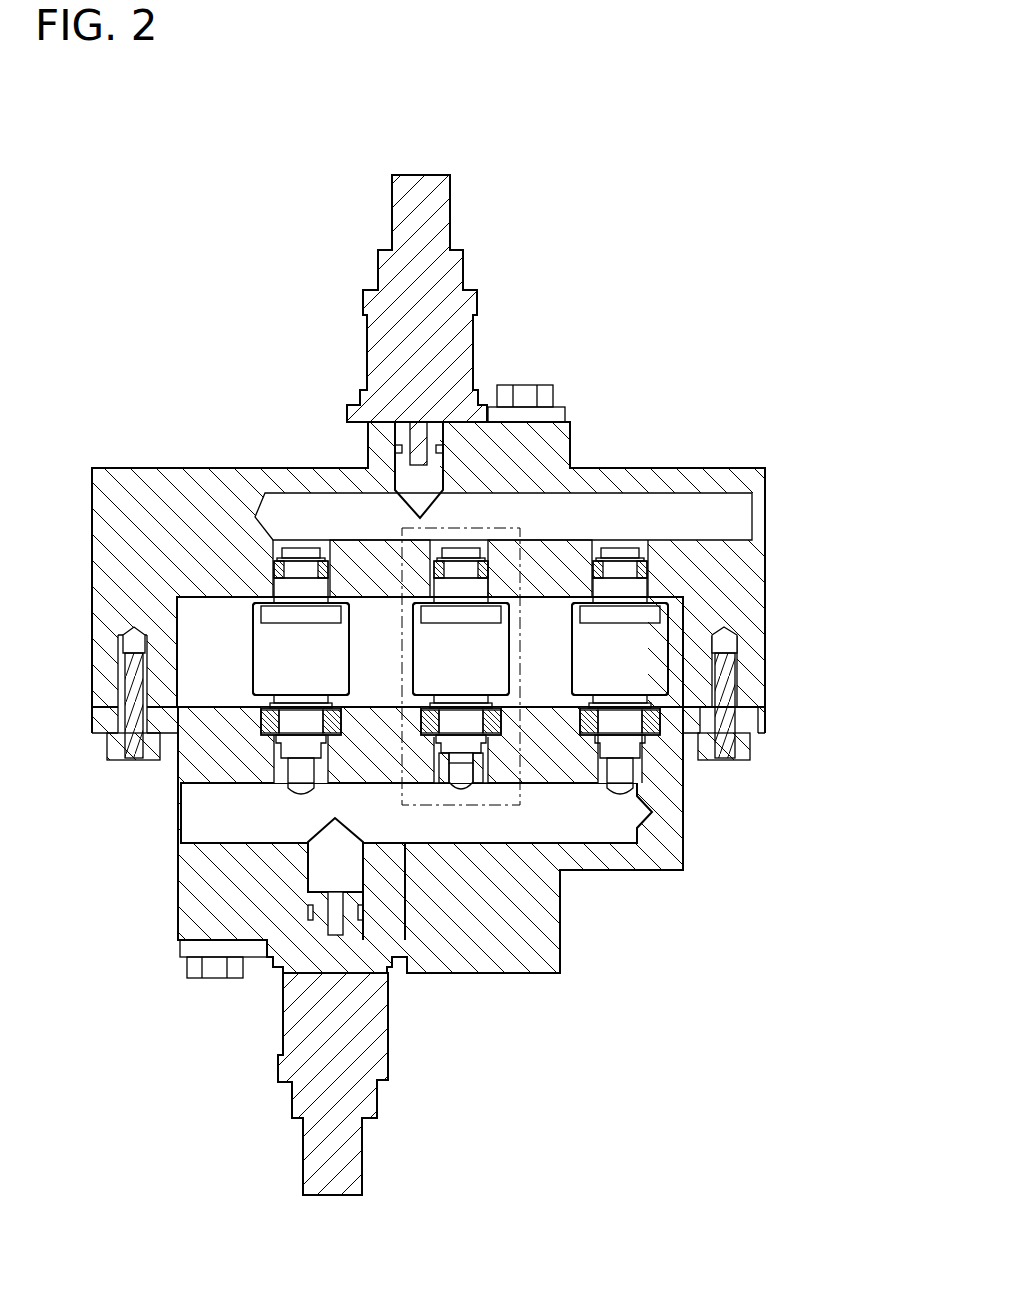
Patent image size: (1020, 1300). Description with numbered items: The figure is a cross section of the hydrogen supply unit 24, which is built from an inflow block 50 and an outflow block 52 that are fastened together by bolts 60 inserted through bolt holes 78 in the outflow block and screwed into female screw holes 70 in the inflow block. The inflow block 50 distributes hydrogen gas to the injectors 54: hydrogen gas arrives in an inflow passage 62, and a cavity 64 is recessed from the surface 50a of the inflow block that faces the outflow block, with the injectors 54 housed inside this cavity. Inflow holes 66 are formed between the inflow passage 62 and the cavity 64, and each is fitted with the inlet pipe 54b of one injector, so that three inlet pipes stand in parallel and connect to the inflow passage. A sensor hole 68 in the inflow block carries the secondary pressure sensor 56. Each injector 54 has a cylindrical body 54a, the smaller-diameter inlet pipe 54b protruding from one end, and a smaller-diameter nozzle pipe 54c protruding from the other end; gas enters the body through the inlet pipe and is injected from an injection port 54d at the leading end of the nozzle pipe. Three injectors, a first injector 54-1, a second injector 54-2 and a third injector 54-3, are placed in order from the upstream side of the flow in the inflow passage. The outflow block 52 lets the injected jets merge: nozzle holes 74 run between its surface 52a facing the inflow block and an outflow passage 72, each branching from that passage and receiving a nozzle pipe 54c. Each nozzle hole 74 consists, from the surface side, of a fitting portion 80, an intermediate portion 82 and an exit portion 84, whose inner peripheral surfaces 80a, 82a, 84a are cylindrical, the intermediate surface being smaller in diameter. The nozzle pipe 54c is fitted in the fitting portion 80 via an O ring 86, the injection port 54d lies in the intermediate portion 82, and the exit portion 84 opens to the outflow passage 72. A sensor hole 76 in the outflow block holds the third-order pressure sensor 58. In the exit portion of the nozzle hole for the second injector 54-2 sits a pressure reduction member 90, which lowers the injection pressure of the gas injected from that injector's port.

The hydrogen supply unit 24 is at (285, 252).
The inflow block 50 is at (464, 560).
The surface of the inflow block 50a is at (760, 708).
The outflow block 52 is at (359, 892).
The surface of the outflow block 52a is at (122, 718).
The injector 54 is at (432, 745).
The first injector 54-1 is at (564, 660).
The second injector 54-2 is at (517, 623).
The third injector 54-3 is at (242, 630).
The body 54a is at (281, 663).
The inlet pipe 54b is at (305, 548).
The nozzle pipe 54c is at (316, 752).
The injection port 54d is at (306, 790).
The secondary pressure sensor 56 is at (404, 312).
The third-order pressure sensor 58 is at (316, 1060).
The bolt 60 is at (150, 722).
The inflow passage 62 is at (548, 527).
The cavity 64 is at (678, 590).
The inflow hole 66 is at (283, 565).
The sensor hole 68 is at (405, 443).
The female screw hole 70 is at (128, 640).
The outflow passage 72 is at (383, 835).
The nozzle hole 74 is at (432, 926).
The sensor hole 76 is at (363, 862).
The bolt hole 78 is at (128, 758).
The fitting portion 80 is at (431, 920).
The inner peripheral surface of the fitting portion 80a is at (785, 938).
The intermediate portion 82 is at (432, 933).
The inner peripheral surface of the intermediate portion 82a is at (646, 748).
The exit portion 84 is at (432, 933).
The inner peripheral surface of the exit portion 84a is at (432, 933).
The O ring 86 is at (338, 718).
The pressure reduction member 90 is at (440, 801).